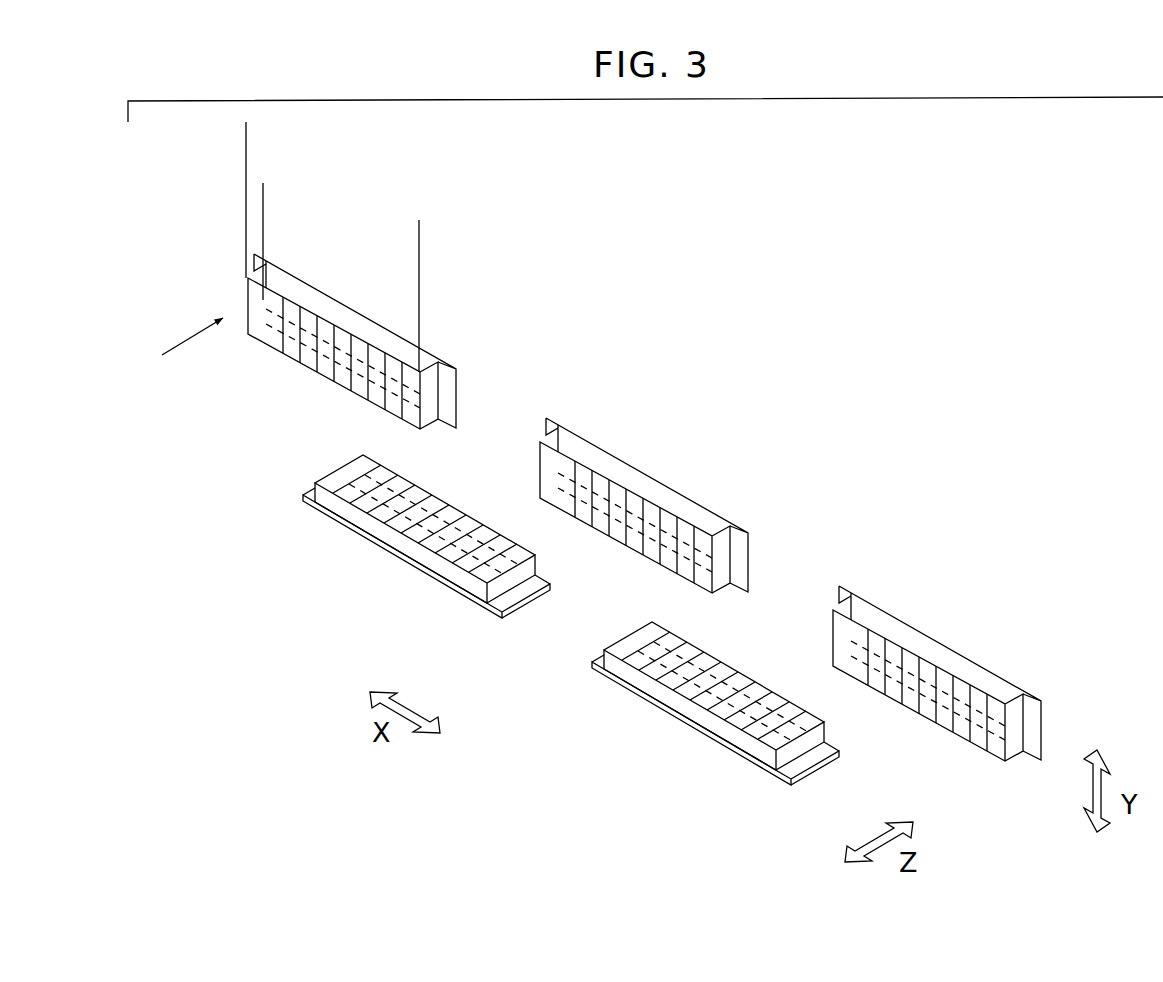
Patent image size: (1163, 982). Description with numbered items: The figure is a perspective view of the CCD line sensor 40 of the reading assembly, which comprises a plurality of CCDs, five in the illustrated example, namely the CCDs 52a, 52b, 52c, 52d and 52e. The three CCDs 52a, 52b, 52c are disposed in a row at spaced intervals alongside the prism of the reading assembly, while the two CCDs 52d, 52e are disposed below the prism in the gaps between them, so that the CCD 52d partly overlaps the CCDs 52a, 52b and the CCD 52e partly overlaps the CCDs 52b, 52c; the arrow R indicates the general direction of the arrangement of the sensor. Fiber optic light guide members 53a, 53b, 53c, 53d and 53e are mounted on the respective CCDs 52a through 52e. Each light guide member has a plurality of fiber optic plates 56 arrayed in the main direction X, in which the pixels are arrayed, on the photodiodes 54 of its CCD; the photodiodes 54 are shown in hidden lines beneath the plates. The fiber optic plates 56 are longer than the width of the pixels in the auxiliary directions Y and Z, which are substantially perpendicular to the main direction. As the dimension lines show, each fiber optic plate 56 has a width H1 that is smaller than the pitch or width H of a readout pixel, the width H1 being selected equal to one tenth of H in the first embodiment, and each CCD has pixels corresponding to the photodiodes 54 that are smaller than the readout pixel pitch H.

The CCD line sensor 40 is at (938, 387).
The CCD 52a is at (352, 343).
The CCD 52b is at (644, 508).
The CCD 52c is at (937, 678).
The CCD 52d is at (426, 521).
The CCD 52e is at (715, 687).
The fiber optic light guide member 53a is at (342, 390).
The fiber optic light guide member 53b is at (633, 555).
The fiber optic light guide member 53c is at (925, 727).
The fiber optic light guide member 53d is at (457, 502).
The fiber optic light guide member 53e is at (755, 668).
The photodiodes 54 is at (312, 373).
The fiber optic plates 56 is at (290, 347).
The pitch or width of a readout pixel H is at (452, 265).
The width of fiber optic plate H1 is at (295, 228).
The arrangement direction R is at (181, 348).